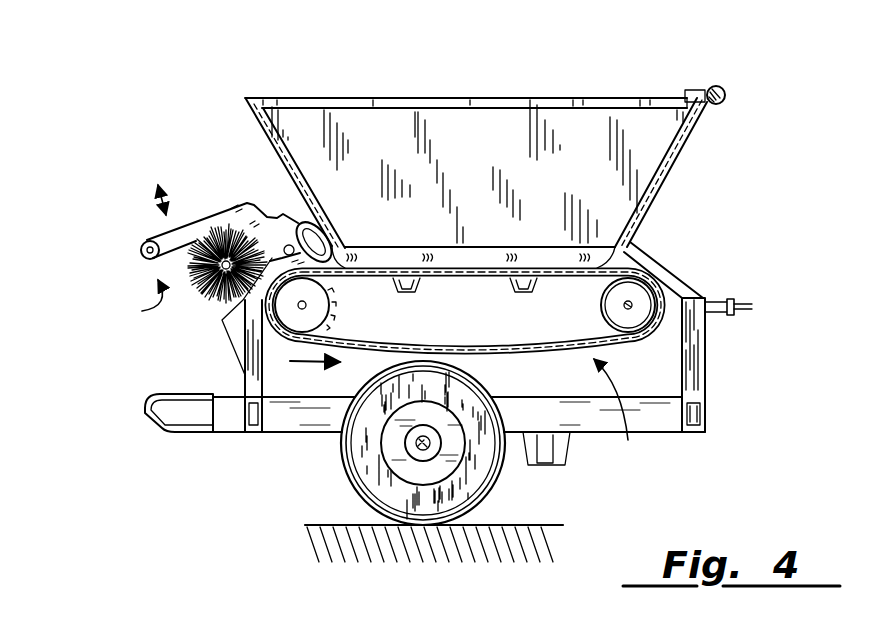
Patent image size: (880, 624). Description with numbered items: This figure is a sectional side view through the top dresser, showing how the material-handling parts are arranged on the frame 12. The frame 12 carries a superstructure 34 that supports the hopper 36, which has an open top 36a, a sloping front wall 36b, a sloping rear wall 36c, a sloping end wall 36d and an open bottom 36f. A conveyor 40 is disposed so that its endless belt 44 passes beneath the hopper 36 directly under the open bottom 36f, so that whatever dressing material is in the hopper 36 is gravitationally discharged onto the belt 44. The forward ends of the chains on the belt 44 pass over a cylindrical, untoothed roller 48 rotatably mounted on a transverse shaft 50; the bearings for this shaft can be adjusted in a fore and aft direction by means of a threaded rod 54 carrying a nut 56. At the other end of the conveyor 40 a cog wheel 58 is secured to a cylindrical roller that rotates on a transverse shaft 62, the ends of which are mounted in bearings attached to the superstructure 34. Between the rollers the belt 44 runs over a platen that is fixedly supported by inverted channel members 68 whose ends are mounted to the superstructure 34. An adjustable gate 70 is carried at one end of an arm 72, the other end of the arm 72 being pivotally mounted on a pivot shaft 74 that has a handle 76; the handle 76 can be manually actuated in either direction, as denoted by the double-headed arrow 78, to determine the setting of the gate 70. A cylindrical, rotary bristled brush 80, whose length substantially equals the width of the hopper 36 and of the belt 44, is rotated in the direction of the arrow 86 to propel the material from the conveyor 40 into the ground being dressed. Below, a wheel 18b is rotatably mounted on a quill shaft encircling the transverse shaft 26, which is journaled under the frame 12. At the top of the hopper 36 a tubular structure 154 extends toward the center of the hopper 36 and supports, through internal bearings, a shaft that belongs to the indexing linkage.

The frame 12 is at (243, 432).
The wheel 18b is at (490, 493).
The transverse shaft 26 is at (423, 443).
The superstructure 34 is at (673, 272).
The hopper 36 is at (690, 139).
The open top 36a is at (412, 98).
The sloping front wall 36b is at (671, 175).
The sloping rear wall 36c is at (266, 138).
The sloping end wall 36d is at (500, 156).
The open bottom 36f is at (342, 247).
The conveyor 40 is at (620, 415).
The endless belt 44 is at (451, 350).
The roller 48 is at (597, 313).
The transverse shaft 50 is at (630, 308).
The threaded rod 54 is at (730, 298).
The nut 56 is at (753, 306).
The cog wheel 58 is at (338, 328).
The transverse shaft 62 is at (301, 307).
The inverted channel member 68 is at (520, 292).
The adjustable gate 70 is at (317, 223).
The arm 72 is at (237, 210).
The pivot shaft 74 is at (289, 245).
The handle 76 is at (141, 250).
The double-headed arrow 78 is at (155, 203).
The rotary bristled brush 80 is at (212, 312).
The arrow 86 is at (136, 302).
The tubular structure 154 is at (724, 88).